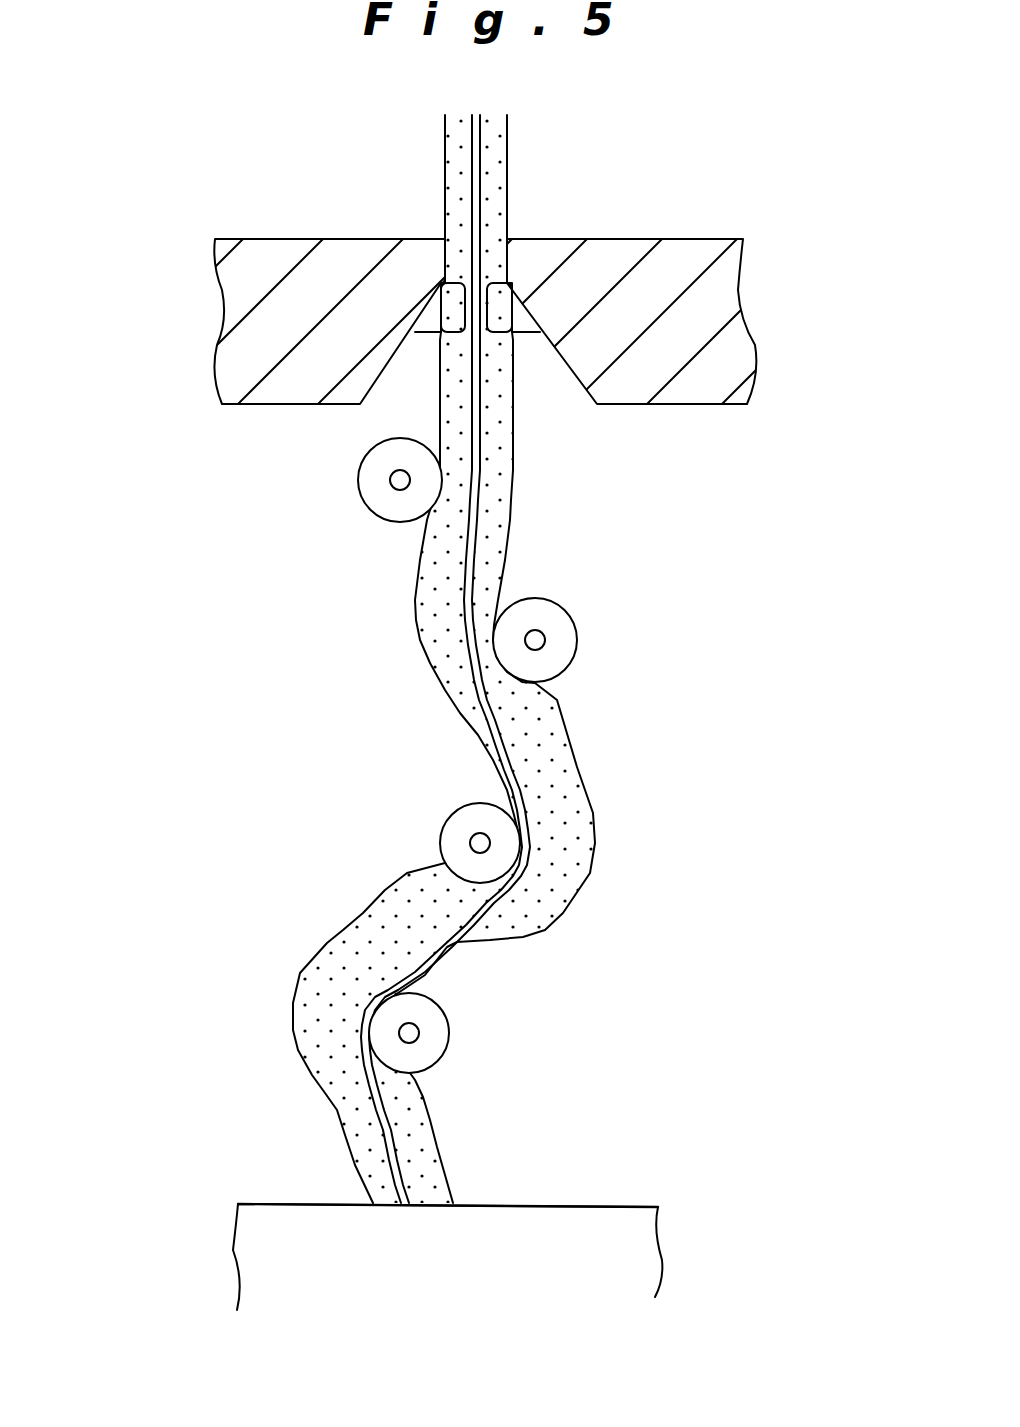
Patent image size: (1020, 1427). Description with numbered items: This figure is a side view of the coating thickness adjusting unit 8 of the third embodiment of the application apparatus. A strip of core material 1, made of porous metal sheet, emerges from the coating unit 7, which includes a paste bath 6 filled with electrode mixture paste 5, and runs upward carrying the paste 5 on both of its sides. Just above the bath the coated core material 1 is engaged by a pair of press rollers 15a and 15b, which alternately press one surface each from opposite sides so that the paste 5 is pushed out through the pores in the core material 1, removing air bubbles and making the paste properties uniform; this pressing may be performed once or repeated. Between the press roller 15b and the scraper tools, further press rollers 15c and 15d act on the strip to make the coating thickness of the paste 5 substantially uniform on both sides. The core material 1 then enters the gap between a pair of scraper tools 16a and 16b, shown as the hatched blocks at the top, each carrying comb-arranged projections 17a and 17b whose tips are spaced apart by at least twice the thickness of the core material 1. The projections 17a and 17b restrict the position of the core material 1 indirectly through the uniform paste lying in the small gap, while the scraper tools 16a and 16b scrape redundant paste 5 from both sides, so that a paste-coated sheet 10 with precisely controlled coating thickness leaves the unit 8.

The core material 1 is at (470, 152).
The electrode mixture paste 5 is at (453, 187).
The paste-coated sheet 10 is at (513, 167).
The scraper tool 16a is at (273, 268).
The scraper tool 16b is at (667, 260).
The projections 17a is at (430, 332).
The projections 17b is at (528, 332).
The press roller 15a is at (430, 1020).
The press roller 15b is at (460, 828).
The press roller 15c is at (563, 632).
The press roller 15d is at (395, 483).
The coating thickness adjusting unit 8 is at (383, 755).
The coating unit 7 is at (588, 1205).
The paste bath 6 is at (489, 1206).